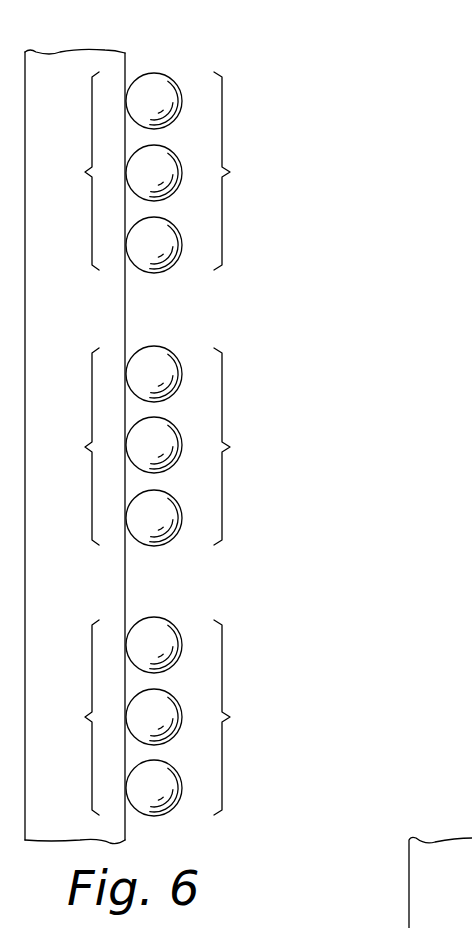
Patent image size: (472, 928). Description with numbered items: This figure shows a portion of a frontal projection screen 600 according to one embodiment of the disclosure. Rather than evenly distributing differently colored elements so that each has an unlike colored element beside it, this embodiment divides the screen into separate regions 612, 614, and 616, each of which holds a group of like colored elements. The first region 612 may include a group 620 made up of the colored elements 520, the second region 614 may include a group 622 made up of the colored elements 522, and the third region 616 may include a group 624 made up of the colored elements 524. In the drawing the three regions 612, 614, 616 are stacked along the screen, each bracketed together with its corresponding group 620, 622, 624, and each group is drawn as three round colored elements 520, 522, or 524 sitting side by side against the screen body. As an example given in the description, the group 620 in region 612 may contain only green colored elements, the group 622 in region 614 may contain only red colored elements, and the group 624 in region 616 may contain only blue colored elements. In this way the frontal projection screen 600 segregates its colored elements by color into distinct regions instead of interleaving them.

The frontal projection screen 600 is at (330, 76).
The colored element 520 is at (165, 150).
The colored element 522 is at (166, 430).
The colored element 524 is at (166, 702).
The region 612 is at (71, 171).
The region 614 is at (71, 446).
The region 616 is at (71, 717).
The group of like colored elements 620 is at (243, 171).
The group of like colored elements 622 is at (243, 446).
The group of like colored elements 624 is at (243, 717).